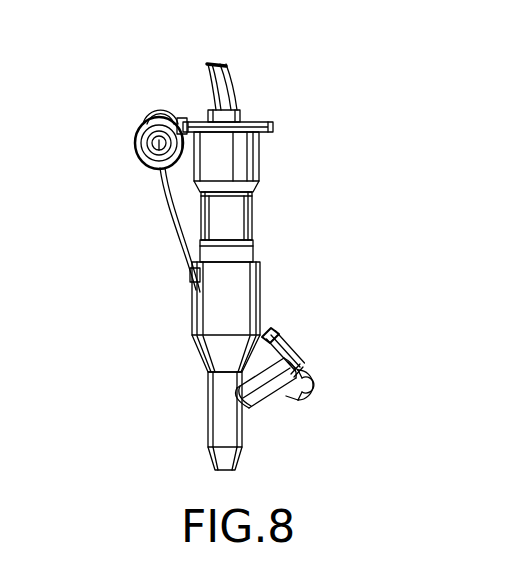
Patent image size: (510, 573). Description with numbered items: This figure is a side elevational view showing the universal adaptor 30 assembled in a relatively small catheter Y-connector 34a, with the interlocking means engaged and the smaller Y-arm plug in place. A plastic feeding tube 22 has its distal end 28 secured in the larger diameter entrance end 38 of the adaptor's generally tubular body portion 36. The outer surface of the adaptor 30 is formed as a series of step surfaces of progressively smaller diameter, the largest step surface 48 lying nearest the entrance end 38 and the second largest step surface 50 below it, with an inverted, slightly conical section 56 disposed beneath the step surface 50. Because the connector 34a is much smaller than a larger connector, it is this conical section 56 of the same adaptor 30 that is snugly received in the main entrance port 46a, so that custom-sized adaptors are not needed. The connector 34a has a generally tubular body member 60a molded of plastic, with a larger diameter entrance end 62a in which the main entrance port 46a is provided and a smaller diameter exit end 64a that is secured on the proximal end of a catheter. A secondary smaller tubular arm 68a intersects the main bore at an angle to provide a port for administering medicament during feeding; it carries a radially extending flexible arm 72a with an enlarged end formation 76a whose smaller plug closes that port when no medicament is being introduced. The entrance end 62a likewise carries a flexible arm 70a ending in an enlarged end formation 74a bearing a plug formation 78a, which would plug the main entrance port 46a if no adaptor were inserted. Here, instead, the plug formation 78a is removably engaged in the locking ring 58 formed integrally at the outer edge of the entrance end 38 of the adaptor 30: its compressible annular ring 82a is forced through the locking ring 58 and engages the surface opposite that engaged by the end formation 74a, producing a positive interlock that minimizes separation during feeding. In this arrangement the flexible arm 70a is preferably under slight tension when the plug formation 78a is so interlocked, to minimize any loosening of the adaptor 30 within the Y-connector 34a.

The feeding tube 22 is at (240, 67).
The distal end 28 is at (240, 112).
The entrance end 38 is at (270, 128).
The adaptor 30 is at (263, 152).
The step surface 48 is at (262, 173).
The tubular body portion 36 is at (254, 206).
The step surface 50 is at (253, 232).
The conical section 56 is at (254, 250).
The entrance end 62a is at (262, 272).
The connector 34a is at (191, 306).
The tubular body member 60a is at (197, 348).
The exit end 64a is at (240, 453).
The end formation 76a is at (282, 336).
The flexible arm 72a is at (320, 387).
The secondary arm 68a is at (294, 402).
The end formation 74a is at (152, 112).
The compressible annular ring 82a is at (136, 140).
The locking ring 58 is at (148, 149).
The plug formation 78a is at (146, 161).
The flexible arm 70a is at (170, 222).
The main entrance port 46a is at (190, 270).